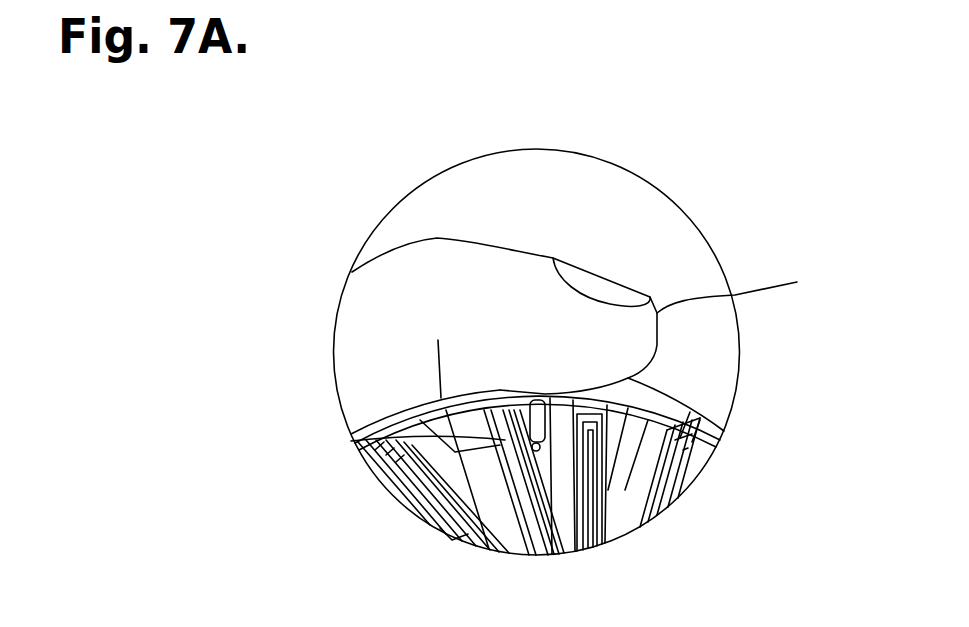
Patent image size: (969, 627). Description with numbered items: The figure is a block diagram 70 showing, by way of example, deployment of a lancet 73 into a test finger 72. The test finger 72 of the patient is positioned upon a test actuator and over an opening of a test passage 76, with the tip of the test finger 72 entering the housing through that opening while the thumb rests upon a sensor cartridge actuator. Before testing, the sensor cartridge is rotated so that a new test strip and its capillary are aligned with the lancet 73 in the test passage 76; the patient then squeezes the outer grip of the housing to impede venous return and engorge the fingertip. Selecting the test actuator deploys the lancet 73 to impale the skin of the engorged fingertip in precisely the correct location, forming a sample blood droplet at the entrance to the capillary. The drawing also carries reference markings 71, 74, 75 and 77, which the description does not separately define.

The block diagram 70 is at (201, 133).
The cover layer 71 is at (705, 425).
The test finger 72 is at (591, 318).
The lancet 73 is at (445, 417).
The sensing electrode 74 is at (545, 518).
The sensing electrode 75 is at (478, 462).
The test passage 76 is at (545, 460).
The touch location 77 is at (537, 385).